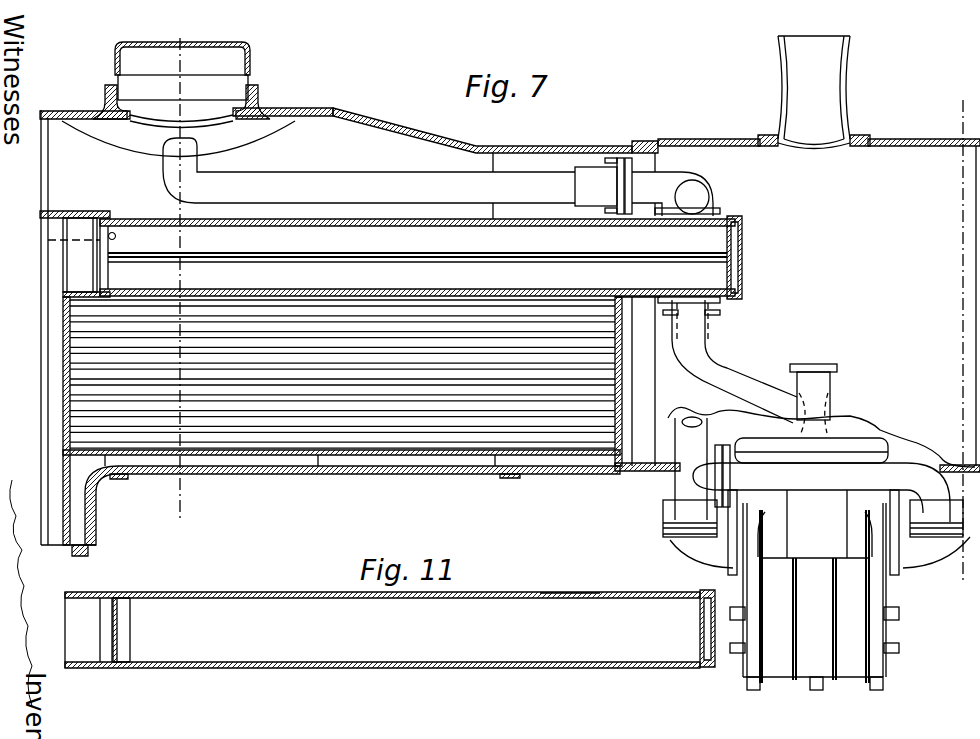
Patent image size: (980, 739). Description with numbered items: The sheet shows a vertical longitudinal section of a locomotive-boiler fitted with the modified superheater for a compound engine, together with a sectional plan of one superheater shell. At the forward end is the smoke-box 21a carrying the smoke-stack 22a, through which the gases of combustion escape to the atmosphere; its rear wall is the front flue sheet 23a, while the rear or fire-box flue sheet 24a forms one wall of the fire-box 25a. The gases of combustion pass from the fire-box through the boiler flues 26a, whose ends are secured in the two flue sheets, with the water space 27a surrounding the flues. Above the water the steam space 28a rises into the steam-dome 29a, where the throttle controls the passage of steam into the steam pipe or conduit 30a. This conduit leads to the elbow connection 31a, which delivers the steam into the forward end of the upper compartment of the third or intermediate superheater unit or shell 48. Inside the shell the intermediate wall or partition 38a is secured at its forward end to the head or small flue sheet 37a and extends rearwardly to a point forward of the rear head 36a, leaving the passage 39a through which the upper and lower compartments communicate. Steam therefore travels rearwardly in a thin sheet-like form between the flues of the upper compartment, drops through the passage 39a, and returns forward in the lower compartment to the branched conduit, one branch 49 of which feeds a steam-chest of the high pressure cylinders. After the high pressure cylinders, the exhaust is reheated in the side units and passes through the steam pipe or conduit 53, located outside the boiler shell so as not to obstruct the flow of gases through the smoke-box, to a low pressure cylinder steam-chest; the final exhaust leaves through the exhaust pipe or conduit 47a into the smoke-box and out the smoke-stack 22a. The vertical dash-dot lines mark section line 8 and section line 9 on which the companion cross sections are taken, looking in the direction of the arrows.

In FIG. 7, the section line 9— 9 is at (165, 36).
In FIG. 7, the section line 8— 8 is at (958, 98).
In FIG. 7, the smoke-box 21a is at (819, 305).
In FIG. 7, the smoke-stack 22a is at (814, 92).
In FIG. 7, the front flue sheet 23a is at (614, 452).
In FIG. 7, the rear or fire-box flue sheet 24a is at (62, 510).
In FIG. 7, the fire-box 25a is at (52, 385).
In FIG. 7, the boiler flues 26a is at (212, 430).
In FIG. 7, the water space 27a is at (352, 494).
In FIG. 7, the steam space 28a is at (178, 155).
In FIG. 7, the steam-dome 29a is at (182, 73).
In FIG. 7, the steam pipe or conduit 30a is at (397, 176).
In FIG. 7, the elbow connection 31a is at (683, 185).
In FIG. 7, the rear head 36a is at (98, 238).
In FIG. 11, the rear head 36a is at (117, 662).
In FIG. 7, the head or small flue sheet 37a is at (728, 256).
In FIG. 11, the head or small flue sheet 37a is at (700, 650).
In FIG. 11, the intermediate wall or partition 38a is at (382, 630).
In FIG. 11, the passage 39a is at (116, 615).
In FIG. 7, the exhaust pipe or conduit 47a is at (822, 385).
In FIG. 11, the third or intermediate superheater unit or shell 48 is at (566, 598).
In FIG. 7, the branch of the steam conduit 49 is at (727, 360).
In FIG. 7, the steam pipe or conduit 53 is at (819, 548).